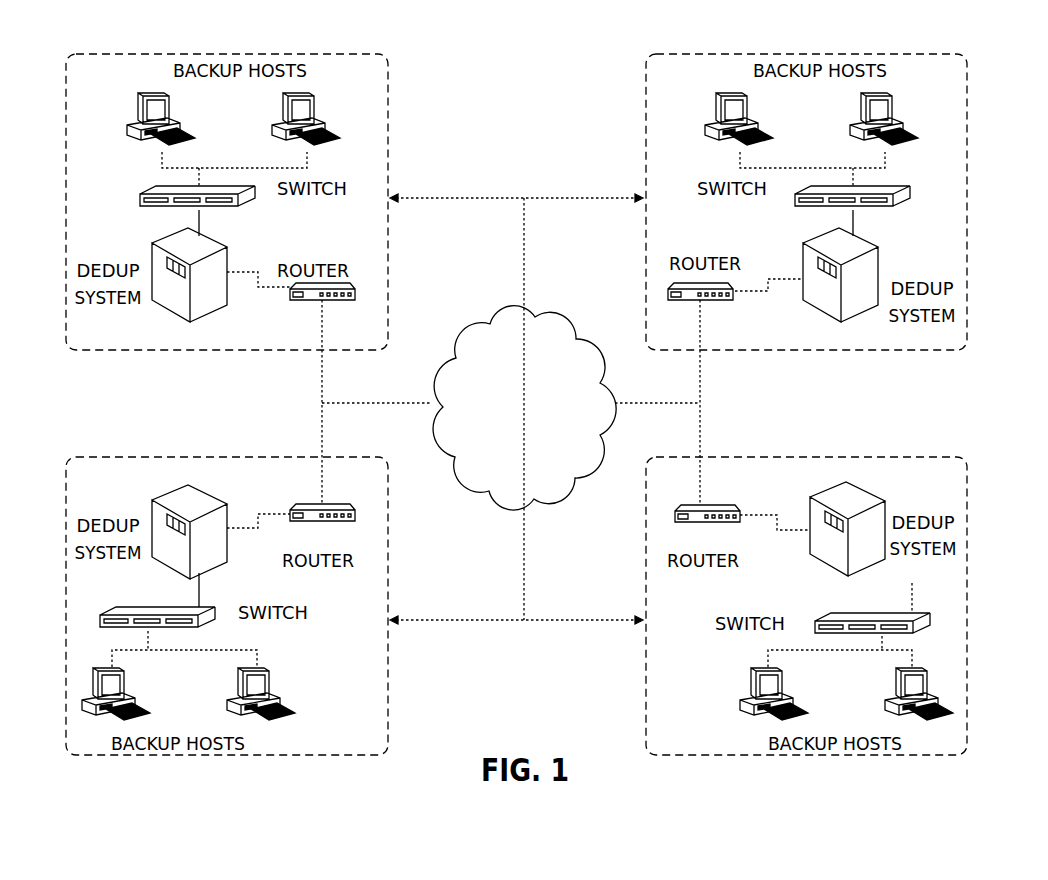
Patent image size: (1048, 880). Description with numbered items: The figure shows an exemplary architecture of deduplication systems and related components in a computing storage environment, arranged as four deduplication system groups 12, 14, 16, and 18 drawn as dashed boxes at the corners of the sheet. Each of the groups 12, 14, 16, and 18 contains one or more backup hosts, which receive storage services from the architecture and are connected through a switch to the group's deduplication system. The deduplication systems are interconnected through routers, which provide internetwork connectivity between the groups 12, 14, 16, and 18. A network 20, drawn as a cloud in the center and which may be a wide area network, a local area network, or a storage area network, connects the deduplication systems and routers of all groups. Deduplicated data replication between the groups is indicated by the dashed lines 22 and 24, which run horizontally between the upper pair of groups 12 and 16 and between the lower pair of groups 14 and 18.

The deduplication system group 12 is at (388, 72).
The deduplication system group 14 is at (388, 530).
The deduplication system group 16 is at (967, 72).
The deduplication system group 18 is at (967, 477).
The network 20 is at (540, 312).
The dashed line 22 is at (425, 200).
The dashed line 24 is at (535, 620).